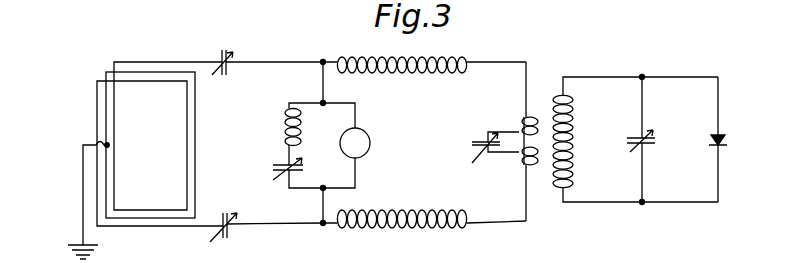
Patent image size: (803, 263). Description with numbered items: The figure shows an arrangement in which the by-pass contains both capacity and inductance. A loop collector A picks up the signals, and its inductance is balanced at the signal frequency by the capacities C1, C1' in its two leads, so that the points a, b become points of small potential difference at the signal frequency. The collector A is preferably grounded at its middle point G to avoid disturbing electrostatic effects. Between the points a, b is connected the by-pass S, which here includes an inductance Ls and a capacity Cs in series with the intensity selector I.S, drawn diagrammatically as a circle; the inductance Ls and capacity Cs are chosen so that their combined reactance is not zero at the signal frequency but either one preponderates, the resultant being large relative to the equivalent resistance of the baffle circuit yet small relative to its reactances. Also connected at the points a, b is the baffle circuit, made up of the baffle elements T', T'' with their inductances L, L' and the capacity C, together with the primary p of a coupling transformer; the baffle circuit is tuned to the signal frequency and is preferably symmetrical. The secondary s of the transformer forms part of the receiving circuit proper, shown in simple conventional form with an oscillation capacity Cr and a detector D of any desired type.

The collector A is at (160, 144).
The middle point ground G is at (83, 201).
The capacity C1 is at (267, 77).
The capacity C1' is at (266, 211).
The point a is at (321, 68).
The point b is at (317, 223).
The by-pass S is at (303, 146).
The inductance Ls is at (307, 137).
The capacity Cs is at (303, 170).
The intensity selector I.S is at (355, 143).
The inductance L is at (424, 79).
The inductance L' is at (424, 205).
The baffle element T' is at (511, 75).
The baffle element T'' is at (506, 207).
The capacity C is at (480, 144).
The primary p is at (516, 150).
The secondary s is at (635, 139).
The oscillation capacity Cr is at (657, 140).
The detector D is at (732, 139).